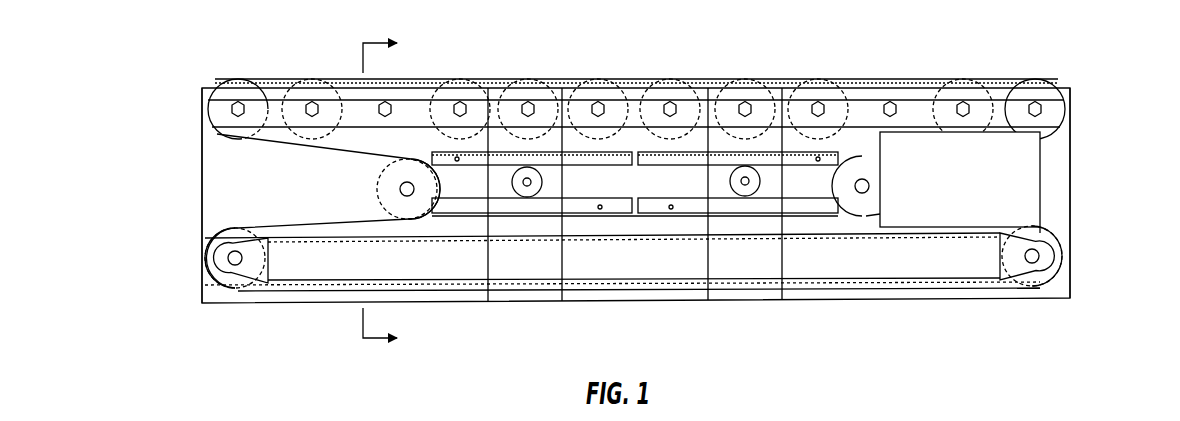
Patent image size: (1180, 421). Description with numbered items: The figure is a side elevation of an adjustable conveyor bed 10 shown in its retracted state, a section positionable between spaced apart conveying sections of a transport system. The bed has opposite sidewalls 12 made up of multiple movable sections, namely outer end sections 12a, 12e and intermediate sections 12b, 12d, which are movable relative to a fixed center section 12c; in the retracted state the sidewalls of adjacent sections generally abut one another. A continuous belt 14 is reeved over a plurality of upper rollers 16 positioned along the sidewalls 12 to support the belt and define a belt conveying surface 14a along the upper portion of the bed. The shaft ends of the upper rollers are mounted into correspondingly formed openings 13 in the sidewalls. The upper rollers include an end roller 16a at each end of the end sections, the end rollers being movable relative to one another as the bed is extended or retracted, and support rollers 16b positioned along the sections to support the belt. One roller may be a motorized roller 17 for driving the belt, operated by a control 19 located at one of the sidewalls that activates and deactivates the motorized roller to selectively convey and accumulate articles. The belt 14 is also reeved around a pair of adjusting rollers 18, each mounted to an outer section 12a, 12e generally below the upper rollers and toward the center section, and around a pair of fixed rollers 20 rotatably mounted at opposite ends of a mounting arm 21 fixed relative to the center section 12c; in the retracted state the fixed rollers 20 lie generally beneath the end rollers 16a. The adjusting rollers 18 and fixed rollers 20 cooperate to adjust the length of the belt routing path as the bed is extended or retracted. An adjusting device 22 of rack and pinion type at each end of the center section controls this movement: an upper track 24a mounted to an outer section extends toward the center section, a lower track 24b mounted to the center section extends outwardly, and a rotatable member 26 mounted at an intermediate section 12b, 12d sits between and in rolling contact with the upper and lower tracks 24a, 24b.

The adjustable conveyor bed 10 is at (161, 94).
The sidewalls 12 is at (643, 211).
The outer end section 12a is at (207, 202).
The intermediate section 12b is at (527, 302).
The center section 12c is at (628, 302).
The intermediate section 12d is at (751, 301).
The outer end section 12e is at (1065, 294).
The openings 13 is at (387, 104).
The continuous belt 14 is at (635, 157).
The belt conveying surface 14a is at (650, 77).
The upper rollers 16 is at (638, 82).
The end roller 16a is at (247, 80).
The support rollers 16b is at (453, 80).
The motorized roller 17 is at (1031, 88).
The adjusting rollers 18 is at (413, 212).
The control 19 is at (1028, 175).
The fixed rollers 20 is at (233, 289).
The mounting arm 21 is at (985, 270).
The adjusting device 22 is at (644, 188).
The upper track 24a is at (480, 160).
The lower track 24b is at (483, 217).
The rotatable member 26 is at (543, 182).